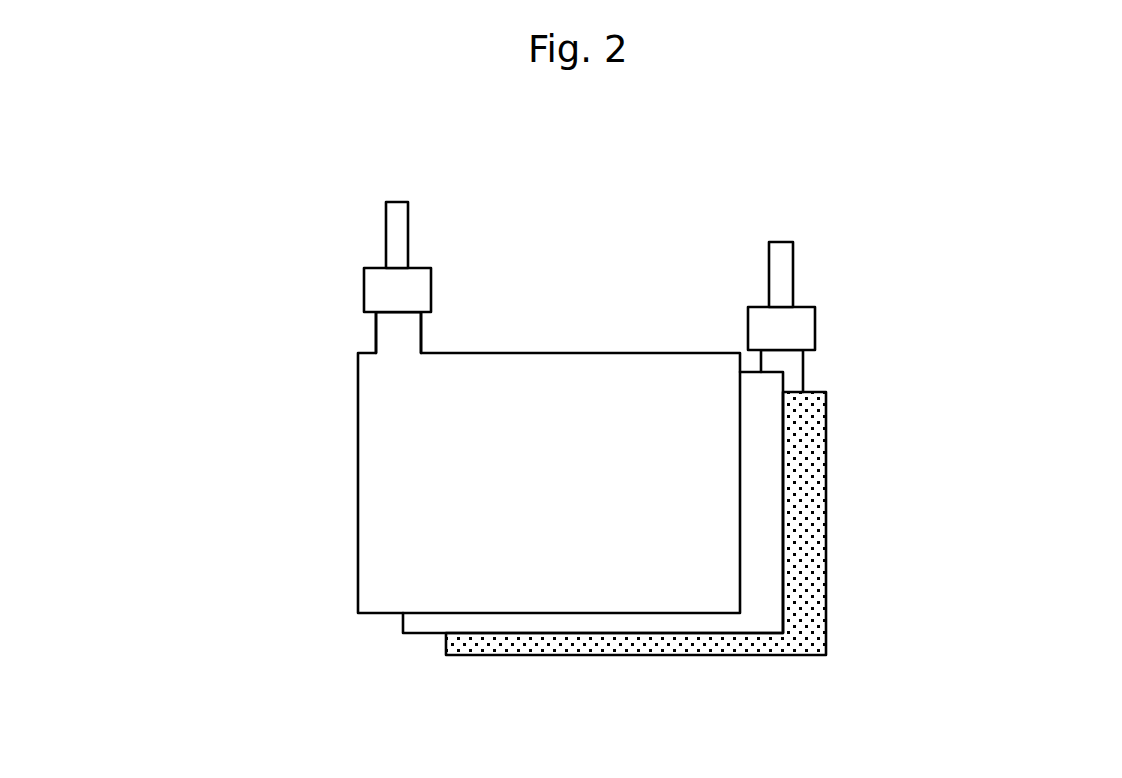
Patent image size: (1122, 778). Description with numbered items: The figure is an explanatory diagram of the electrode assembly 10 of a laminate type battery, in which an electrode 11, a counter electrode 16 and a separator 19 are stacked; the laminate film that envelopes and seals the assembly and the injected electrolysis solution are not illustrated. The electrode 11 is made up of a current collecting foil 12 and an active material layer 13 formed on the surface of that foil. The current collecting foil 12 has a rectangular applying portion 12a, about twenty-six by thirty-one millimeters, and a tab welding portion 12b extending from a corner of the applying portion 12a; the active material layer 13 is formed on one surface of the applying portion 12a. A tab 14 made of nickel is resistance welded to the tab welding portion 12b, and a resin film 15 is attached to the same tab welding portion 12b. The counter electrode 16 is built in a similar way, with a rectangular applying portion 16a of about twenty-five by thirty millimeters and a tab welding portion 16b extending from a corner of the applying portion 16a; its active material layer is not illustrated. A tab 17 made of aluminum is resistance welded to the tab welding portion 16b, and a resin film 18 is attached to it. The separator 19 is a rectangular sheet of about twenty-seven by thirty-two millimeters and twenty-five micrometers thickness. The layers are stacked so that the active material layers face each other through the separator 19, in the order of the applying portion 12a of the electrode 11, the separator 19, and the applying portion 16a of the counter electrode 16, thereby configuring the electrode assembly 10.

The electrode assembly 10 is at (630, 248).
The electrode 11 is at (872, 553).
The current collecting foil 12 is at (993, 330).
The applying portion 12a is at (826, 443).
The tab welding portion 12b is at (803, 368).
The active material layer 13 is at (805, 498).
The tab 14 is at (780, 285).
The resin film 15 is at (802, 327).
The counter electrode 16 is at (317, 513).
The applying portion 16a is at (358, 405).
The tab welding portion 16b is at (376, 330).
The tab 17 is at (397, 245).
The resin film 18 is at (418, 287).
The separator 19 is at (427, 648).